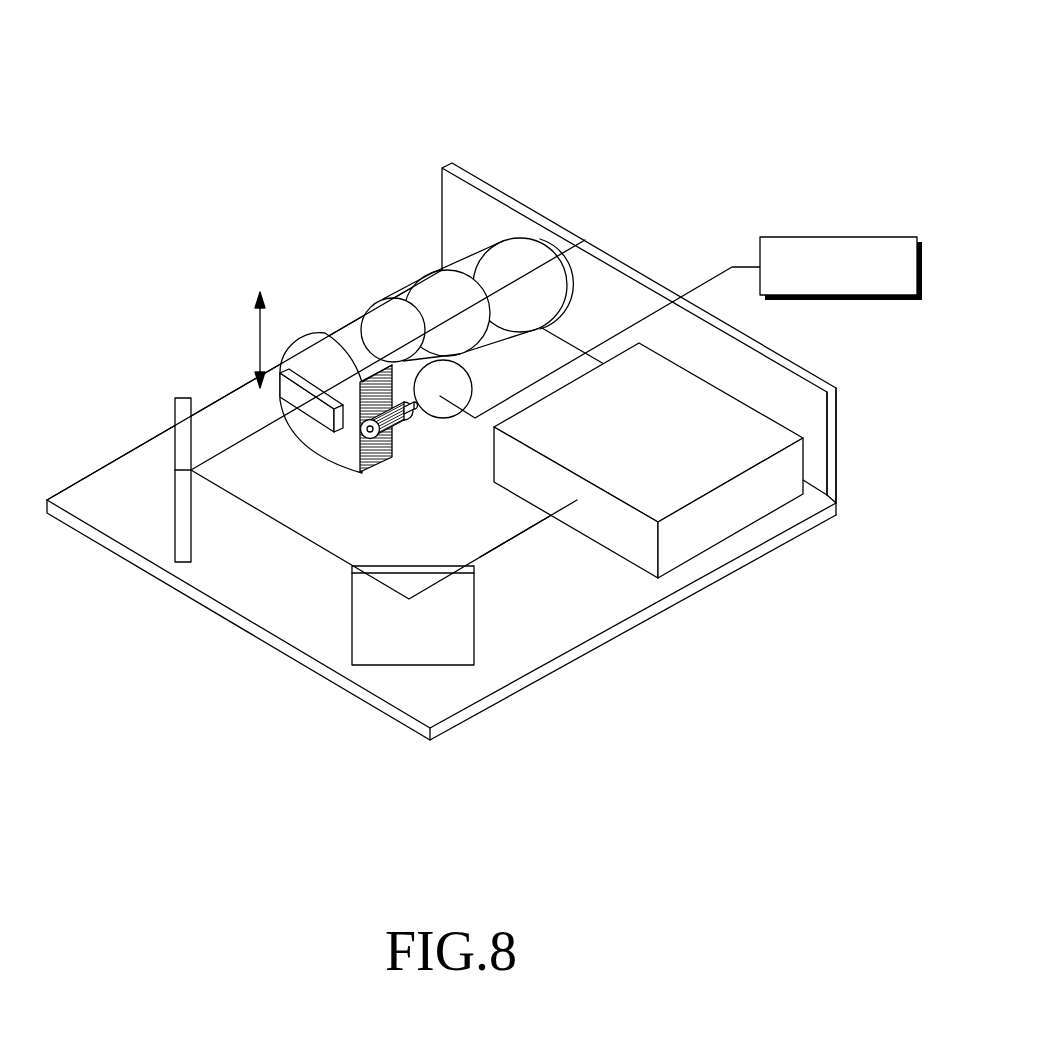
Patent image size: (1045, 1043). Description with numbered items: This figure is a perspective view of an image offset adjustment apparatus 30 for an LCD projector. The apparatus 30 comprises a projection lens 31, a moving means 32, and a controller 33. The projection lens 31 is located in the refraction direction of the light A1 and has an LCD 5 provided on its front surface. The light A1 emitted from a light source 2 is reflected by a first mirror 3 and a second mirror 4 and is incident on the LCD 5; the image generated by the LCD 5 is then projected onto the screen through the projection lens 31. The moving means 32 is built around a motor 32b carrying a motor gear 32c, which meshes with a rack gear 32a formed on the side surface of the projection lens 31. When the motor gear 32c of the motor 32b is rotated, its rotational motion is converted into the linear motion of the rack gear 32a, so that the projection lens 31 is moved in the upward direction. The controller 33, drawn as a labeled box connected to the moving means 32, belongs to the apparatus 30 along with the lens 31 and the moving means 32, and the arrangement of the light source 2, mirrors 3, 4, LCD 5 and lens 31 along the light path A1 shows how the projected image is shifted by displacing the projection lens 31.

The image offset adjustment apparatus 30 is at (603, 36).
The projection lens 31 is at (320, 348).
The moving means 32 is at (493, 285).
The rack gear 32a is at (378, 383).
The motor 32b is at (428, 383).
The motor gear 32c is at (405, 397).
The controller 33 is at (838, 236).
The light source 2 is at (715, 522).
The first mirror 3 is at (397, 648).
The second mirror 4 is at (180, 520).
The LCD 5 is at (285, 397).
The light A1 is at (510, 543).